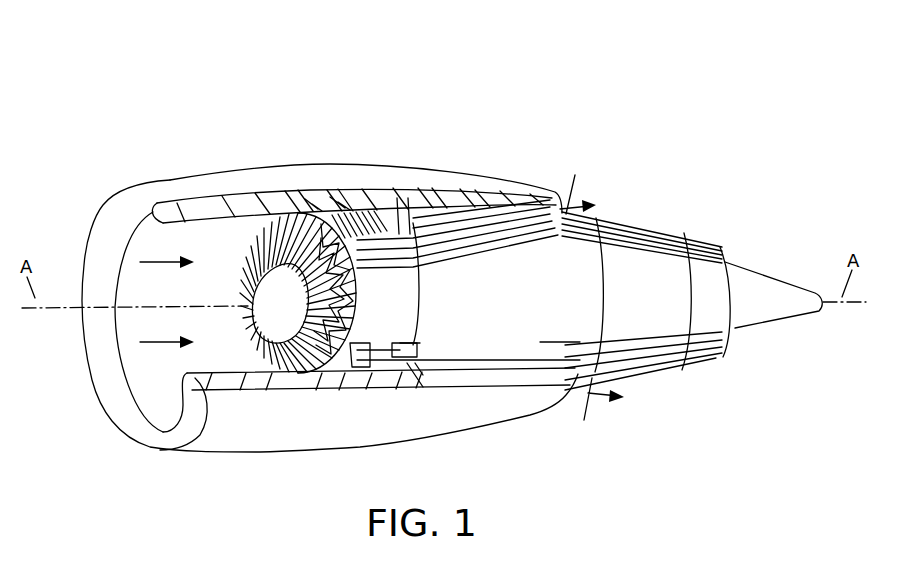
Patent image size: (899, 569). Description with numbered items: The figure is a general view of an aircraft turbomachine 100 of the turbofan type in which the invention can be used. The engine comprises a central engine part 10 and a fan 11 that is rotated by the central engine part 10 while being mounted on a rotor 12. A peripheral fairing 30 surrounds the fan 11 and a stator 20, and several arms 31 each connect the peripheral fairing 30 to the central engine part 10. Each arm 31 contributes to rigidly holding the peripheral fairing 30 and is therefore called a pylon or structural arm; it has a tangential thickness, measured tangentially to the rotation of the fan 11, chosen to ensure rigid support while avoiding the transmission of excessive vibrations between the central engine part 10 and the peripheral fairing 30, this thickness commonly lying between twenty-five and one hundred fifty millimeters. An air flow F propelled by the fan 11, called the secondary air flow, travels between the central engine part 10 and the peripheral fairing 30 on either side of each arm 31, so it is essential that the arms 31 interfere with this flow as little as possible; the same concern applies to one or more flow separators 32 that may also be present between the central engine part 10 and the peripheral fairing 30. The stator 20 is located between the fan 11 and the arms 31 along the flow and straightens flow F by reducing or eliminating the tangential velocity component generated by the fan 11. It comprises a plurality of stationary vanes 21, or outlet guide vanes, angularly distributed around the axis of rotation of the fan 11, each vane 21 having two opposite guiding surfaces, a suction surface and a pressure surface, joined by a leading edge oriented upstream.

The aircraft turbomachine 100 is at (620, 84).
The central engine part 10 is at (482, 307).
The fan 11 is at (305, 230).
The rotor 12 is at (267, 312).
The stator 20 is at (358, 210).
The stationary vane 21 is at (366, 355).
The peripheral fairing 30 is at (333, 176).
The arm 31 is at (397, 230).
The flow separator 32 is at (447, 220).